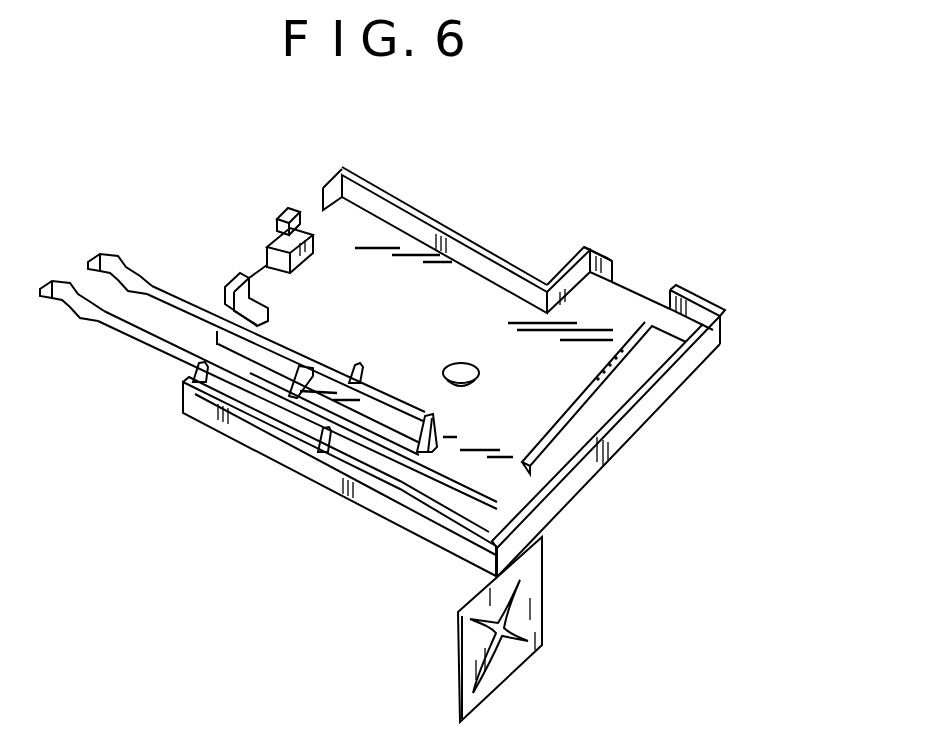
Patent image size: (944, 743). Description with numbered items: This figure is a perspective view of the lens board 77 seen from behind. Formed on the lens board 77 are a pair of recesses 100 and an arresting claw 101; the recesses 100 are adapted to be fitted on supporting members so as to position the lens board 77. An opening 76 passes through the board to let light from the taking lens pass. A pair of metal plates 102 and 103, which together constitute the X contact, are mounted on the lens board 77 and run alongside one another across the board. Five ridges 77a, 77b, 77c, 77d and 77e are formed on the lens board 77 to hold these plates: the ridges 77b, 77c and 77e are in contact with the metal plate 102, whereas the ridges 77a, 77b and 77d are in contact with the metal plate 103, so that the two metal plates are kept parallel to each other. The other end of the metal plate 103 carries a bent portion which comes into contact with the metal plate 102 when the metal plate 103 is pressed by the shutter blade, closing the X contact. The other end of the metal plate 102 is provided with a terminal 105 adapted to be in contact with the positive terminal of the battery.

The opening 76 is at (480, 371).
The lens board 77 is at (433, 215).
The ridge 77a is at (362, 368).
The ridge 77b is at (308, 368).
The ridge 77c is at (322, 454).
The ridge 77d is at (268, 313).
The ridge 77e is at (192, 373).
The recess 100 is at (306, 207).
The arresting claw 101 is at (285, 214).
The metal plate 102 is at (423, 484).
The metal plate 103 is at (437, 415).
The terminal 105 is at (546, 632).